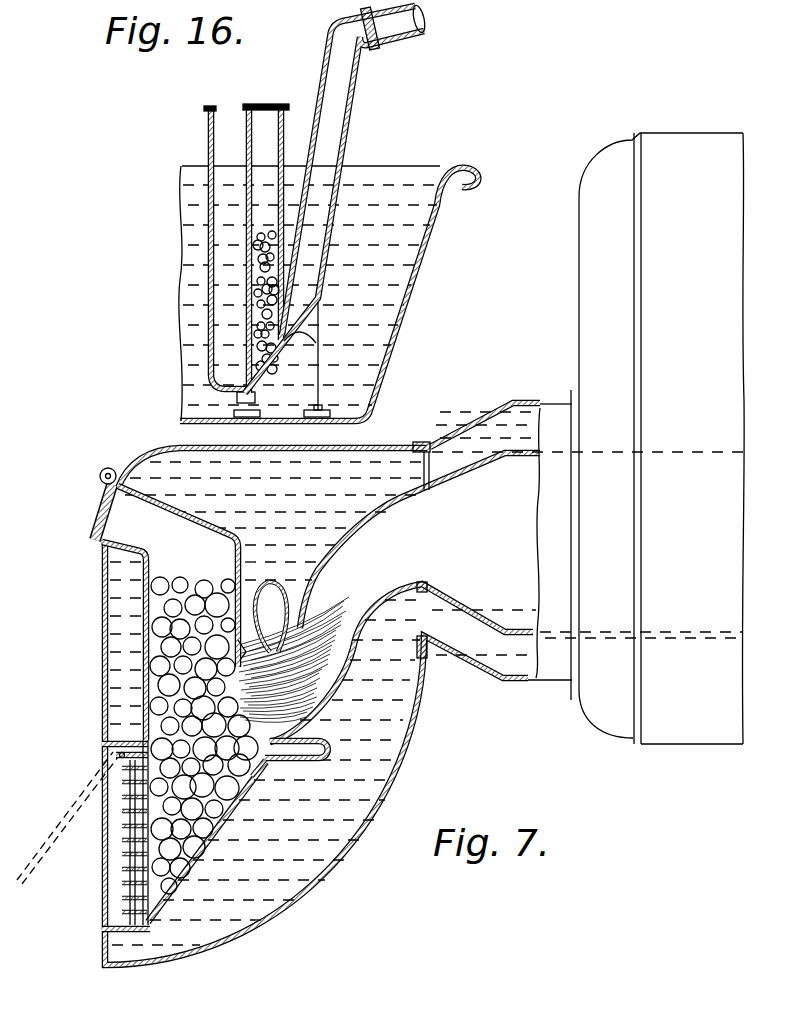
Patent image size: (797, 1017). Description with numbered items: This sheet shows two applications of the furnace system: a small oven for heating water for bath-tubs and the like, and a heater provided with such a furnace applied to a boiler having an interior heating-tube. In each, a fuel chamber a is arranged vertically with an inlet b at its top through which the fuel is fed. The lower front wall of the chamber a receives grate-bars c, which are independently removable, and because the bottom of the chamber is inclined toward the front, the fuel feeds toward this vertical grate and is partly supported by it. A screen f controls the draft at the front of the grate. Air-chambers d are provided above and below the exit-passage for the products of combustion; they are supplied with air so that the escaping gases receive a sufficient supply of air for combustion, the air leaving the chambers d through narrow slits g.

In FIG. 16, the fuel chamber a is at (258, 296).
In FIG. 7, the fuel chamber a is at (204, 735).
In FIG. 16, the inlet b is at (266, 248).
In FIG. 7, the inlet b is at (178, 576).
In FIG. 7, the grate-bars c is at (127, 854).
In FIG. 16, the air-chambers d is at (289, 301).
In FIG. 7, the air-chambers d is at (351, 751).
In FIG. 7, the screen f is at (67, 818).
In FIG. 16, the slits g is at (296, 346).
In FIG. 7, the slits g is at (272, 776).